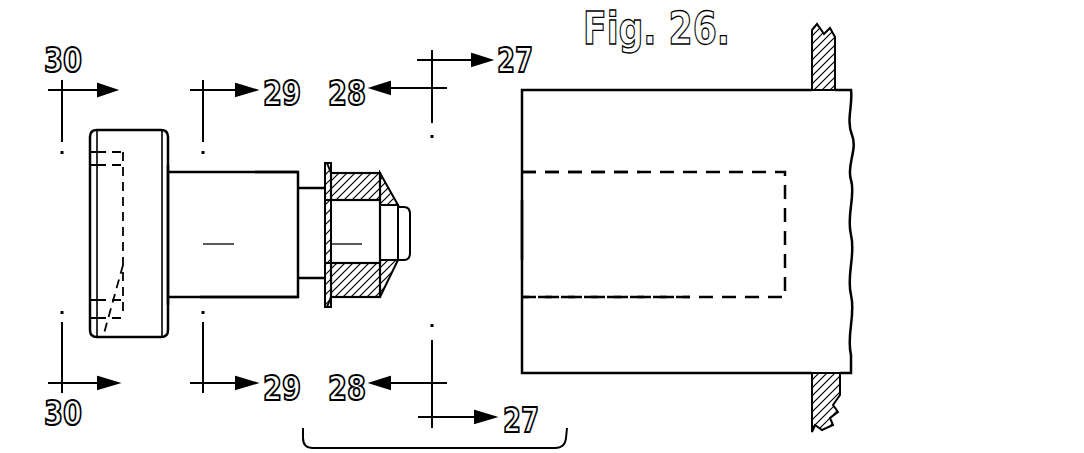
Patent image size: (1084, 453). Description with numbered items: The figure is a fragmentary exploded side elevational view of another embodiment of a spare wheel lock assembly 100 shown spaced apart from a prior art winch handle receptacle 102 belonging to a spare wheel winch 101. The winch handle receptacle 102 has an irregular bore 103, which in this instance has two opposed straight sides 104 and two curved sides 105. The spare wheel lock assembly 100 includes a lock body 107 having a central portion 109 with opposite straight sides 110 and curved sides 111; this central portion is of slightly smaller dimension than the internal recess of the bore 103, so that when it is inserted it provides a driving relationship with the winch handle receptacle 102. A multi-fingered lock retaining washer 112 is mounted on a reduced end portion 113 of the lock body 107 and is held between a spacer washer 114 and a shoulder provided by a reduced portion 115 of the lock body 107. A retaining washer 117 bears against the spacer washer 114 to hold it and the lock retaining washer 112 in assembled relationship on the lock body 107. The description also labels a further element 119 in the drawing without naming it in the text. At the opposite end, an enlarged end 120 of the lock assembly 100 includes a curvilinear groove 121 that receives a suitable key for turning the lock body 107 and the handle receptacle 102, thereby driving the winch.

The spare wheel lock assembly 100 is at (352, 27).
The spare wheel winch 101 is at (812, 50).
The winch handle receptacle 102 is at (722, 90).
The irregular bore 103 is at (735, 172).
The straight sides 104 is at (622, 172).
The curved sides 105 is at (593, 222).
The lock body 107 is at (268, 188).
The central portion 109 is at (238, 272).
The straight sides 110 is at (218, 172).
The curved sides 111 is at (233, 234).
The multi-fingered lock retaining washer 112 is at (329, 166).
The reduced end portion 113 is at (352, 235).
The spacer washer 114 is at (366, 300).
The reduced portion 115 is at (310, 188).
The retaining washer 117 is at (395, 266).
The washer 119 is at (333, 176).
The enlarged end 120 is at (140, 130).
The curvilinear groove 121 is at (103, 337).